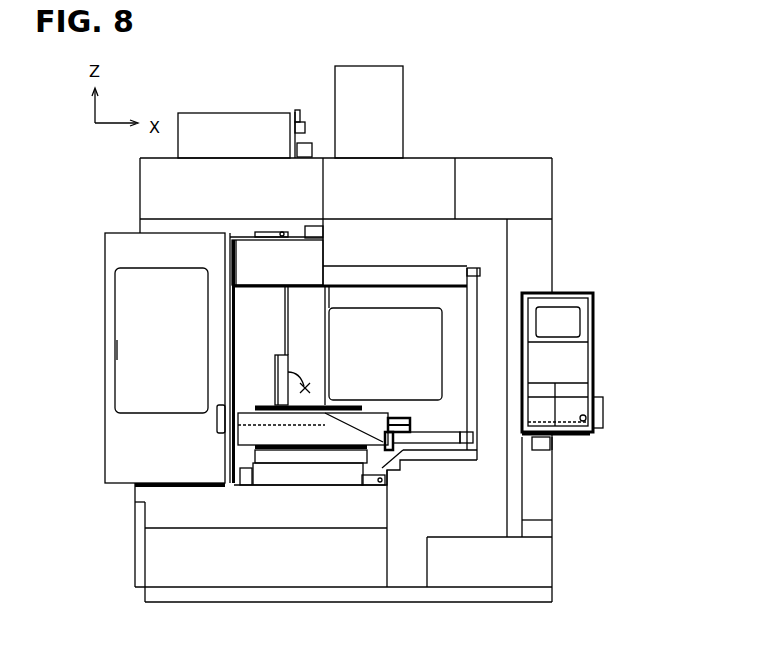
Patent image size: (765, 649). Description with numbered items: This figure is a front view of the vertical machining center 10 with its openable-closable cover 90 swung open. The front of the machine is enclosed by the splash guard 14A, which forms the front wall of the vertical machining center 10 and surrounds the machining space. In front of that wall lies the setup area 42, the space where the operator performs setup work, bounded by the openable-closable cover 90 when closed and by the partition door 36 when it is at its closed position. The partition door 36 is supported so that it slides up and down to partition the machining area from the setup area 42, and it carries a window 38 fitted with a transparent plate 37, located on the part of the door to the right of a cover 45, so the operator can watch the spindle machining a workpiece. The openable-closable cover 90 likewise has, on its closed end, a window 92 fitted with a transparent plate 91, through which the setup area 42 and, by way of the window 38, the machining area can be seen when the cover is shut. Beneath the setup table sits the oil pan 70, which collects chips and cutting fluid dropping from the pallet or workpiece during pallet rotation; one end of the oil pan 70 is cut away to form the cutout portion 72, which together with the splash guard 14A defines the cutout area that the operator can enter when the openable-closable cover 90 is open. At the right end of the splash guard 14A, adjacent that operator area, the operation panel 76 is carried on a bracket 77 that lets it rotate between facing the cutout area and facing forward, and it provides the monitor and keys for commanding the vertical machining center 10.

The vertical machining center 10 is at (546, 113).
The splash guard 14A is at (424, 483).
The partition door 36 is at (270, 289).
The transparent plate 37 is at (388, 318).
The window 38 is at (362, 322).
The setup area 42 is at (275, 372).
The cover 45 is at (297, 317).
The oil pan 70 is at (323, 437).
The cutout portion 72 is at (390, 413).
The operation panel 76 is at (578, 363).
The bracket 77 is at (550, 443).
The openable-closable cover 90 is at (123, 448).
The transparent plate 91 is at (148, 318).
The window 92 is at (123, 350).